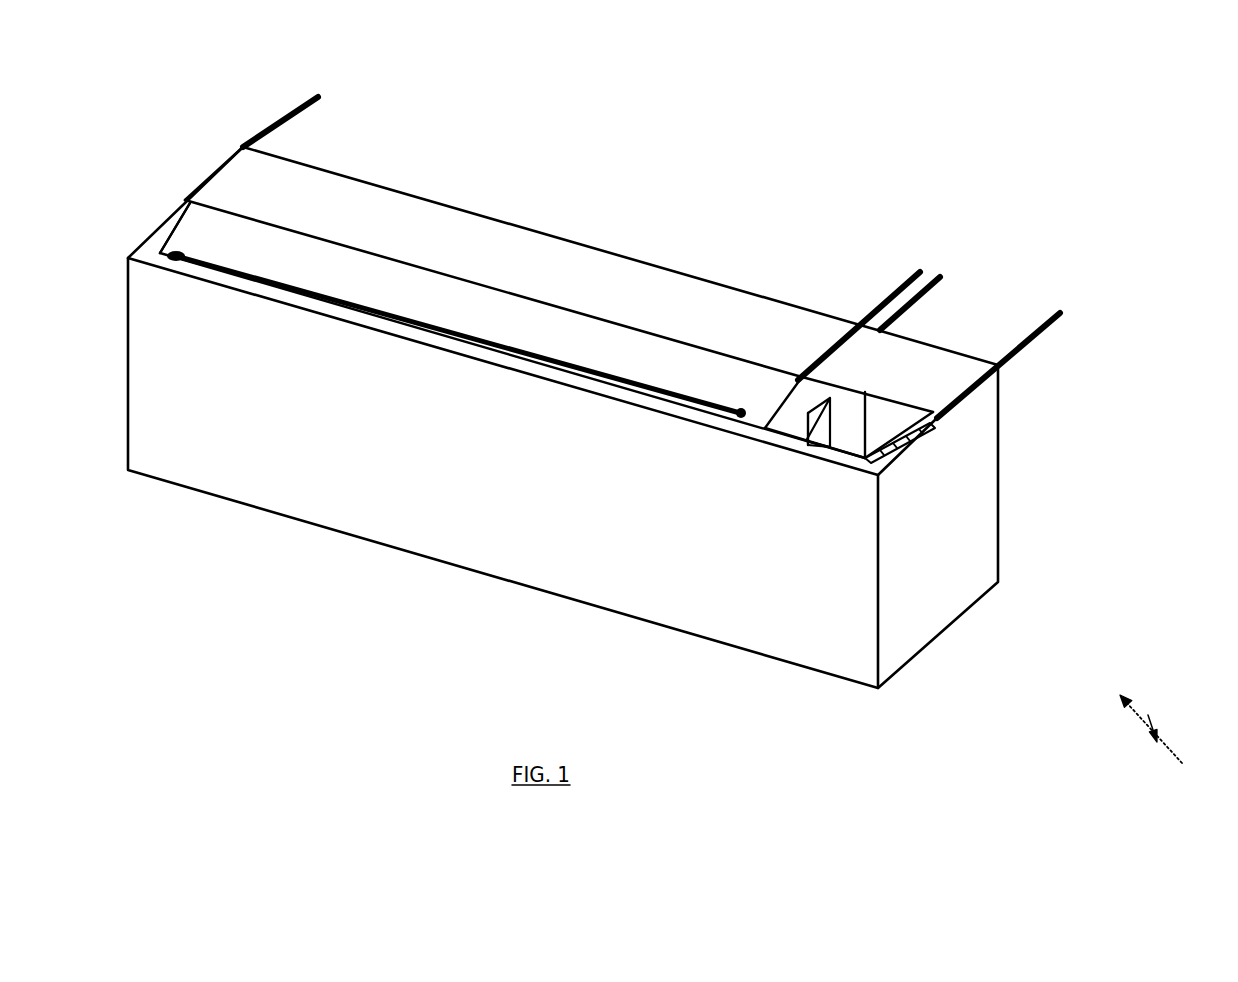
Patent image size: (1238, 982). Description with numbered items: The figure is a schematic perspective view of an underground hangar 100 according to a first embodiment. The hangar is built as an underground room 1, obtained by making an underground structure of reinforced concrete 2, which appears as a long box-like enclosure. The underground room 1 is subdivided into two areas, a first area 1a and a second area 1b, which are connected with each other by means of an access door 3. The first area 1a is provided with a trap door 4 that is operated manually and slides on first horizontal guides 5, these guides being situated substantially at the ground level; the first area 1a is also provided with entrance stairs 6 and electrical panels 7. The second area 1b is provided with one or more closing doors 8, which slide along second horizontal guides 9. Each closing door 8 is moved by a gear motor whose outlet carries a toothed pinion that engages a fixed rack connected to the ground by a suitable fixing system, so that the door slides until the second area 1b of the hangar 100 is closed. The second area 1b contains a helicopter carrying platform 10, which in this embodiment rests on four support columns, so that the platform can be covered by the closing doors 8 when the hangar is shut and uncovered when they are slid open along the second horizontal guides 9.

The underground room 1 is at (563, 185).
The first area 1a is at (876, 408).
The second area 1b is at (510, 300).
The underground structure of reinforced concrete 2 is at (380, 532).
The access door 3 is at (808, 423).
The trap door 4 is at (938, 363).
The first horizontal guides 5 is at (930, 280).
The entrance stairs 6 is at (845, 455).
The electrical panels 7 is at (893, 430).
The closing door 8 is at (375, 197).
The second horizontal guides 9 is at (284, 114).
The helicopter carrying platform 10 is at (217, 243).
The hangar 100 is at (1175, 741).